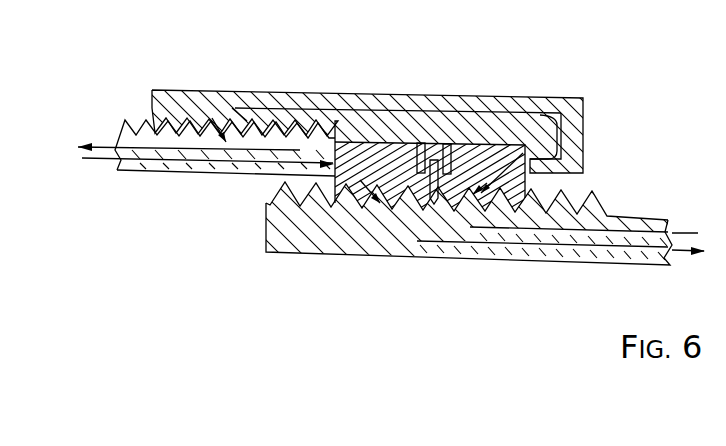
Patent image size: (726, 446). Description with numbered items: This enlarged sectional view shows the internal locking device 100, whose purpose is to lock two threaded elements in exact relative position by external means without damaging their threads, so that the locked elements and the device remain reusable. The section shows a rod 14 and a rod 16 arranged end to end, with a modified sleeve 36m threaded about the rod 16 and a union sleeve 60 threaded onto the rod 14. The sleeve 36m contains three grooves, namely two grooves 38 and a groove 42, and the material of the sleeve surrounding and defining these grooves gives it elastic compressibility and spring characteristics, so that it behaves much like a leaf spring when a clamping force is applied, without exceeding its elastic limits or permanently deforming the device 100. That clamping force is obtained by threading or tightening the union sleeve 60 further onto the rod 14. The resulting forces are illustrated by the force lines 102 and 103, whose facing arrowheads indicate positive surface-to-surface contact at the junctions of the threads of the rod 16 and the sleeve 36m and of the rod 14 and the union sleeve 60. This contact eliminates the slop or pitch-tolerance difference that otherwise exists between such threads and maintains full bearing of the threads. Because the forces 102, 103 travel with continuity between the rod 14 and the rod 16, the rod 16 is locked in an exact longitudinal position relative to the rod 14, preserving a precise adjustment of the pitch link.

The internal locking device 100 is at (418, 84).
The union sleeve 60 is at (226, 90).
The force line 103 is at (332, 95).
The groove 42 is at (428, 180).
The grooves 38 is at (446, 142).
The rod 14 is at (180, 173).
The force line 102 is at (96, 161).
The rod 16 is at (466, 240).
The sleeve (modified) 36m is at (530, 178).